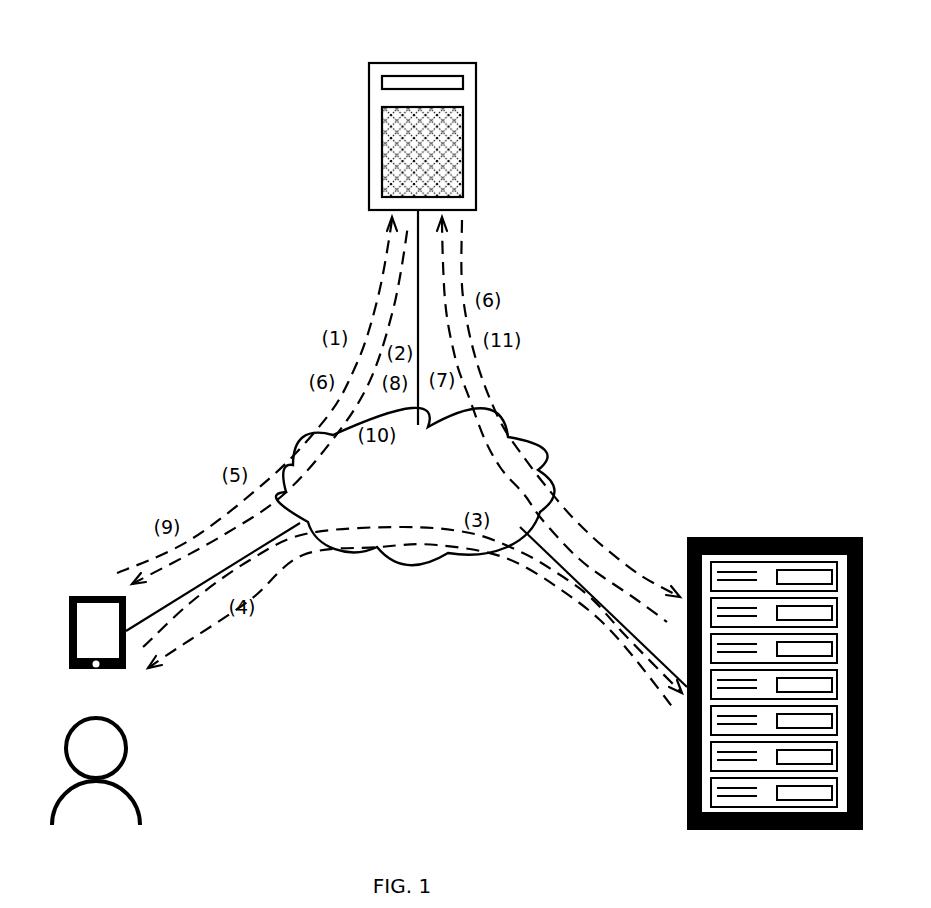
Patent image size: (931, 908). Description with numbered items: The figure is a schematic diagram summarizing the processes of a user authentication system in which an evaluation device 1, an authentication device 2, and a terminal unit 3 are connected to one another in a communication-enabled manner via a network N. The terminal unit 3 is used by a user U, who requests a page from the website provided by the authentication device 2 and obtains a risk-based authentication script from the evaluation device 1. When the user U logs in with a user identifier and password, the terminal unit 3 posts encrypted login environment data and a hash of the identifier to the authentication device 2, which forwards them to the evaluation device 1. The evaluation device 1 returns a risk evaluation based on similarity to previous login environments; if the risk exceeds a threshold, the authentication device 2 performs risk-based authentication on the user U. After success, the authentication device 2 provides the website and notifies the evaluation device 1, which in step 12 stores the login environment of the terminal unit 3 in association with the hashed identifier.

The evaluation device 1 is at (779, 658).
The authentication device 2 is at (450, 63).
The terminal unit 3 is at (69, 598).
The storing of the login environment 12 is at (774, 655).
The network N is at (402, 563).
The user U is at (127, 735).